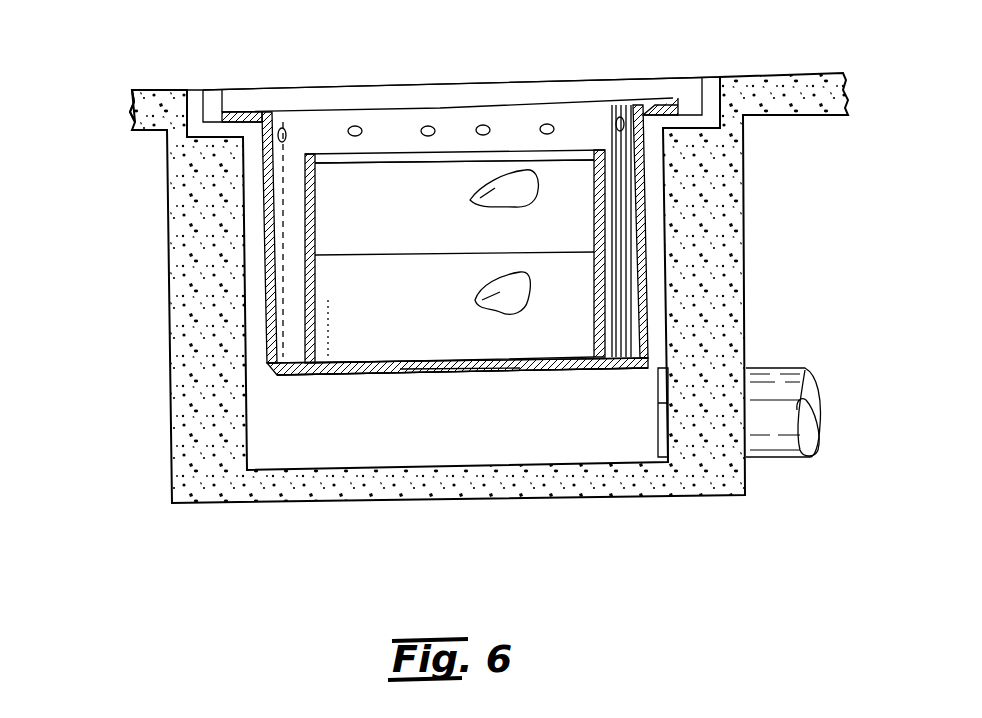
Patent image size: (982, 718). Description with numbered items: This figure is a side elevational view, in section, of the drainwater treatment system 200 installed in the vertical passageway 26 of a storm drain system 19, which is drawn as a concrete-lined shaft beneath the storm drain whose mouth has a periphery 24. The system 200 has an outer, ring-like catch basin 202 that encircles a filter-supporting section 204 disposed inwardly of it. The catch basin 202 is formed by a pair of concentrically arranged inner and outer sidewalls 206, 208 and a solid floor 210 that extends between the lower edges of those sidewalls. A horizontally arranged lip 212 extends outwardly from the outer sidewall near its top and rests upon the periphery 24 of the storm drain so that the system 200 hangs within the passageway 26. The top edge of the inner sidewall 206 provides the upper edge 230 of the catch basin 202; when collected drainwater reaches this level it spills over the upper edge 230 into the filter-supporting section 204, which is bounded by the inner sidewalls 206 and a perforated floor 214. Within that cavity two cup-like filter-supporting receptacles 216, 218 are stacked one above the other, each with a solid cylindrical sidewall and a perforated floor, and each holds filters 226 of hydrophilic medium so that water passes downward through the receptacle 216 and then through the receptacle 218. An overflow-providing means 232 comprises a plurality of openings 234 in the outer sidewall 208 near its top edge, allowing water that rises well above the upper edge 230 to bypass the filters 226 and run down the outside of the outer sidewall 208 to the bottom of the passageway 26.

The storm drain system 19 is at (262, 82).
The periphery 24 is at (213, 120).
The vertical passageway 26 is at (247, 430).
The drainwater treatment system 200 is at (700, 58).
The catch basin 202 is at (293, 170).
The filter-supporting section 204 is at (520, 152).
The inner sidewall 206 is at (332, 338).
The outer sidewall 208 is at (283, 350).
The solid floor 210 is at (320, 376).
The lip 212 is at (678, 98).
The perforated floor 214 is at (470, 375).
The filter-supporting receptacle 216 is at (567, 198).
The filter-supporting receptacle 218 is at (590, 265).
The filters 226 is at (478, 200).
The upper edge 230 is at (452, 152).
The overflow-providing means 232 is at (566, 62).
The openings 234 is at (620, 118).